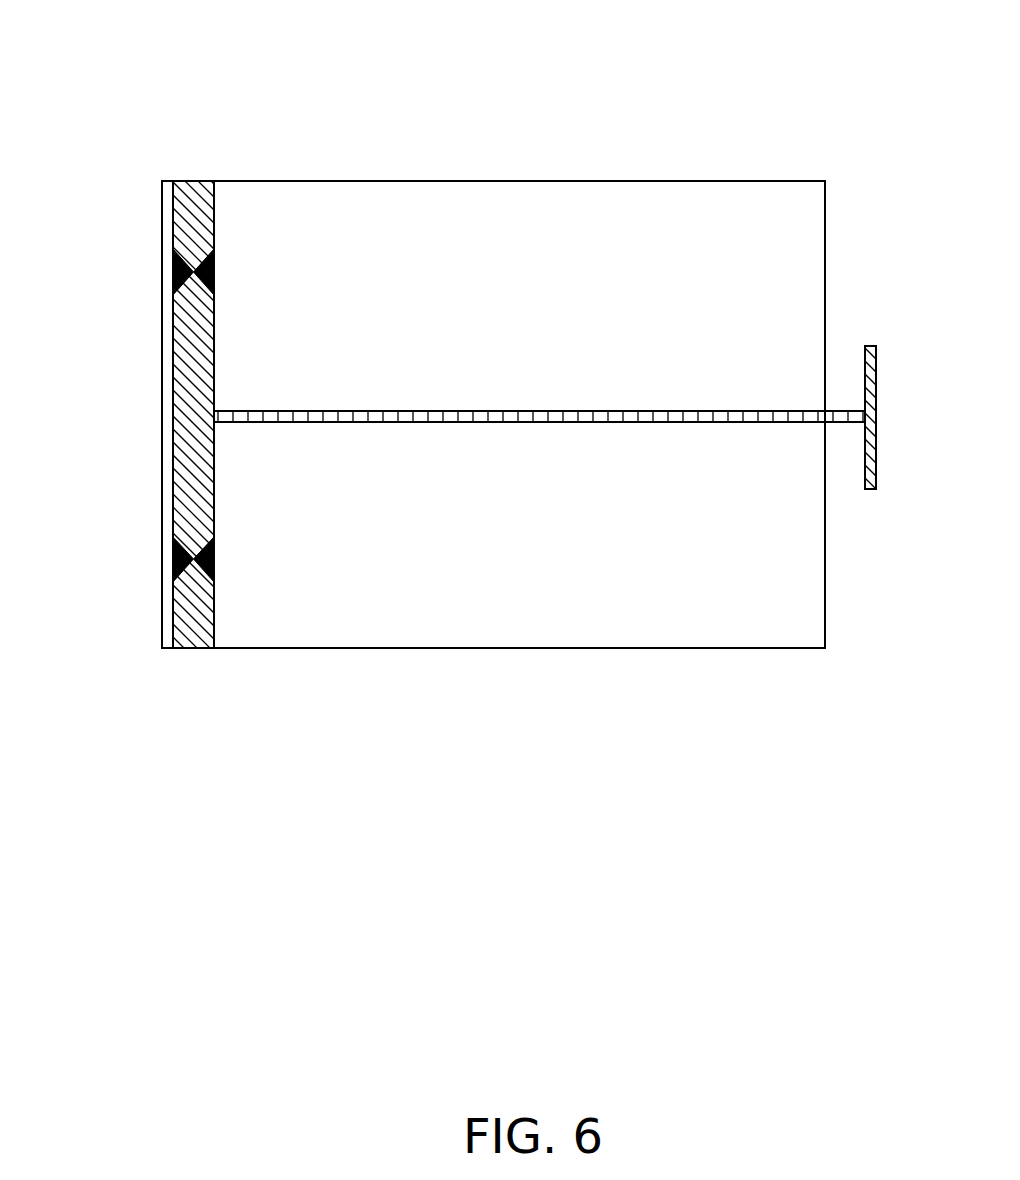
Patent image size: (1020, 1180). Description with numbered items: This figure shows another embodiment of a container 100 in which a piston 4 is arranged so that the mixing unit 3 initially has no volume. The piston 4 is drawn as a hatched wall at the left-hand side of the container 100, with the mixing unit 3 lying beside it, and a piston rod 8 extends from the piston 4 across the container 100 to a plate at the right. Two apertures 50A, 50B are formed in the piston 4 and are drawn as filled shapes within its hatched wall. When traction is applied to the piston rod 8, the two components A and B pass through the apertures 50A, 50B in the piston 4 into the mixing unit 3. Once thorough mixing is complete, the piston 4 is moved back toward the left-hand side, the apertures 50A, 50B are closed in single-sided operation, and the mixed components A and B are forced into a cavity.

The container 100 is at (680, 110).
The mixing unit 3 is at (162, 215).
The piston 4 is at (214, 612).
The piston rod 8 is at (396, 411).
The aperture 50A is at (173, 272).
The aperture 50B is at (173, 558).